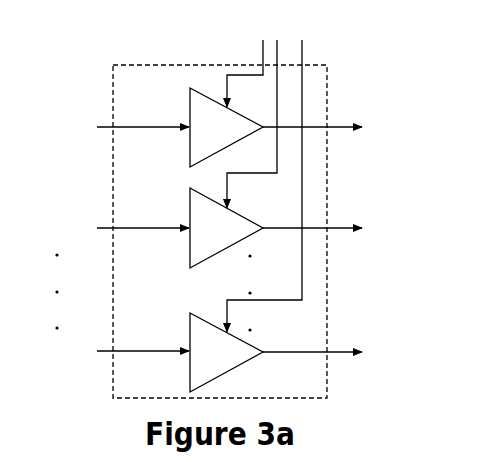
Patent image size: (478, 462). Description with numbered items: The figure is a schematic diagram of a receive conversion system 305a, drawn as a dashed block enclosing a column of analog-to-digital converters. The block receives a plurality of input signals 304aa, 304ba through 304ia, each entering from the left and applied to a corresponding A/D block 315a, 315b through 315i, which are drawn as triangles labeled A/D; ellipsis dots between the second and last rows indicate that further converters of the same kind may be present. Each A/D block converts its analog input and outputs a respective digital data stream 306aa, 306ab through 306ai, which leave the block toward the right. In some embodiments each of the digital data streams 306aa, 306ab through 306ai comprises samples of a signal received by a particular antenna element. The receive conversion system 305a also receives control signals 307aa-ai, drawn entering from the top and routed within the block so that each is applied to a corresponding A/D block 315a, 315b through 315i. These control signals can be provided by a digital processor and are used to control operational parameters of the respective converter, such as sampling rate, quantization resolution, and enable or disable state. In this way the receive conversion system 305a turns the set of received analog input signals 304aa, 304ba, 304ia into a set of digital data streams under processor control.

The receive conversion system 305a is at (216, 212).
The control signals 307aa-ai is at (287, 173).
The A/D block 315a is at (193, 121).
The A/D block 315b is at (193, 224).
The A/D block 315i is at (193, 345).
The input signal 304aa is at (102, 125).
The input signal 304ba is at (102, 229).
The input signal 304ia is at (107, 352).
The digital data stream 306aa is at (351, 130).
The digital data stream 306ab is at (351, 233).
The digital data stream 306ai is at (349, 356).